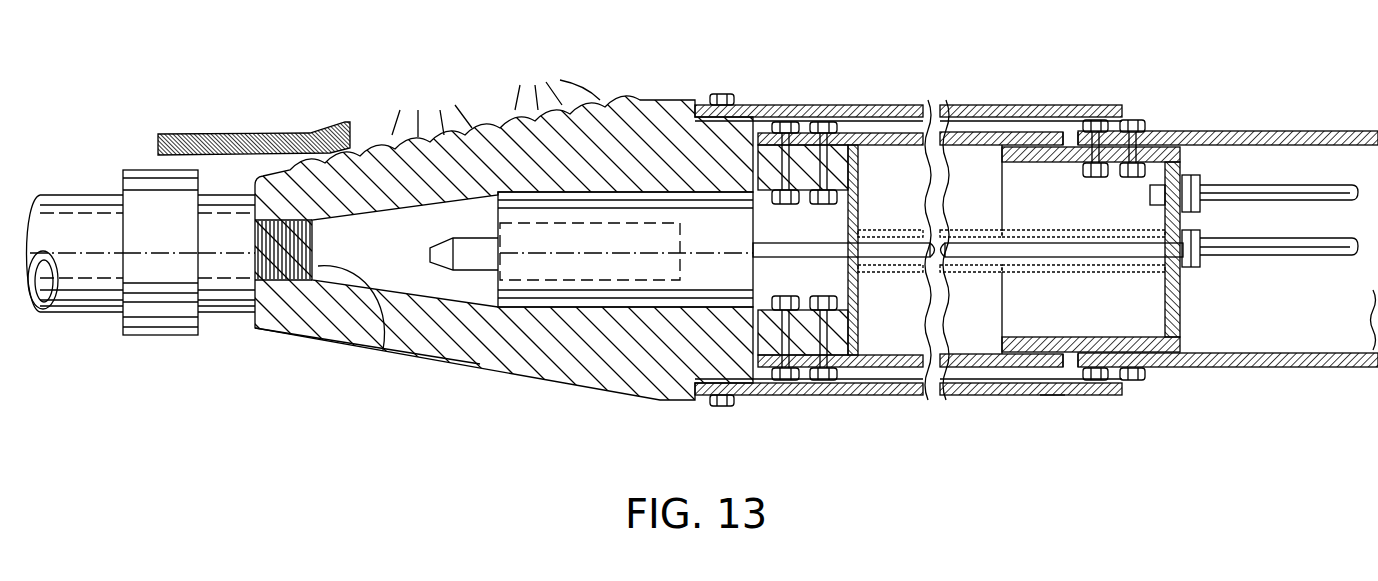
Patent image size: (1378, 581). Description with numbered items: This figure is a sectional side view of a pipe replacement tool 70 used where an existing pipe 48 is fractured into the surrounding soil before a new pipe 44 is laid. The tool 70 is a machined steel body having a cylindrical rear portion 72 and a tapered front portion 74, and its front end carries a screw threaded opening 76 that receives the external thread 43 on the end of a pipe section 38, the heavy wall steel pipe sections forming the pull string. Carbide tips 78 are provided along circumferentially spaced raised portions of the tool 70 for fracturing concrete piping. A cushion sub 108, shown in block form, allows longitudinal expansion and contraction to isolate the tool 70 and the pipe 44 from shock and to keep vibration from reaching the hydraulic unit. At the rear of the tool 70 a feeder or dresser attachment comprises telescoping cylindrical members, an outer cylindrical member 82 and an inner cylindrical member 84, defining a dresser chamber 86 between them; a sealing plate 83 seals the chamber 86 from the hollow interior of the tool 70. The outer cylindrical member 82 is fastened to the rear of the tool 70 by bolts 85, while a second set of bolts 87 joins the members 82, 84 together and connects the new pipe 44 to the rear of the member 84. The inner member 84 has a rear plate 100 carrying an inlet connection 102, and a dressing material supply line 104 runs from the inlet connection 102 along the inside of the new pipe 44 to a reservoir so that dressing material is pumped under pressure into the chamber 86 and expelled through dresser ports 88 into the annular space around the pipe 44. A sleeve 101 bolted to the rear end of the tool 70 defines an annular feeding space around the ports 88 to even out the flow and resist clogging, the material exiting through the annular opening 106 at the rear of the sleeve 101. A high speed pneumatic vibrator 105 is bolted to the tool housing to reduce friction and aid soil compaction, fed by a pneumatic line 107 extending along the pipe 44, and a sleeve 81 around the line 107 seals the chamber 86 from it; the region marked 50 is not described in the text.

The pipe section 38 is at (93, 287).
The cushion sub 108 is at (165, 292).
The existing pipe 48 is at (252, 128).
The external thread 43 is at (289, 300).
The tapered front portion 74 is at (335, 330).
The screw threaded opening 76 is at (382, 352).
The carbide tips 78 is at (496, 96).
The pipe replacement tool 70 is at (633, 290).
The pneumatic vibrator 105 is at (545, 293).
The cylindrical rear portion 72 is at (637, 370).
The outer cylindrical member 82 is at (854, 120).
The sleeve 101 is at (879, 132).
The sealing plate 83 is at (860, 335).
The bolts 85 is at (822, 383).
The sleeve 81 is at (901, 240).
The dresser chamber 86 is at (970, 318).
The dresser ports 88 is at (992, 368).
The new pipe 44 is at (1187, 368).
The inner cylindrical member 84 is at (1090, 350).
The rear plate 100 is at (1182, 313).
The second set of bolts 87 is at (1135, 119).
The annular opening 106 is at (1131, 381).
The pipe section 50 is at (1062, 394).
The inlet connection 102 is at (1190, 175).
The dressing material supply line 104 is at (1322, 185).
The pneumatic line 107 is at (1296, 257).